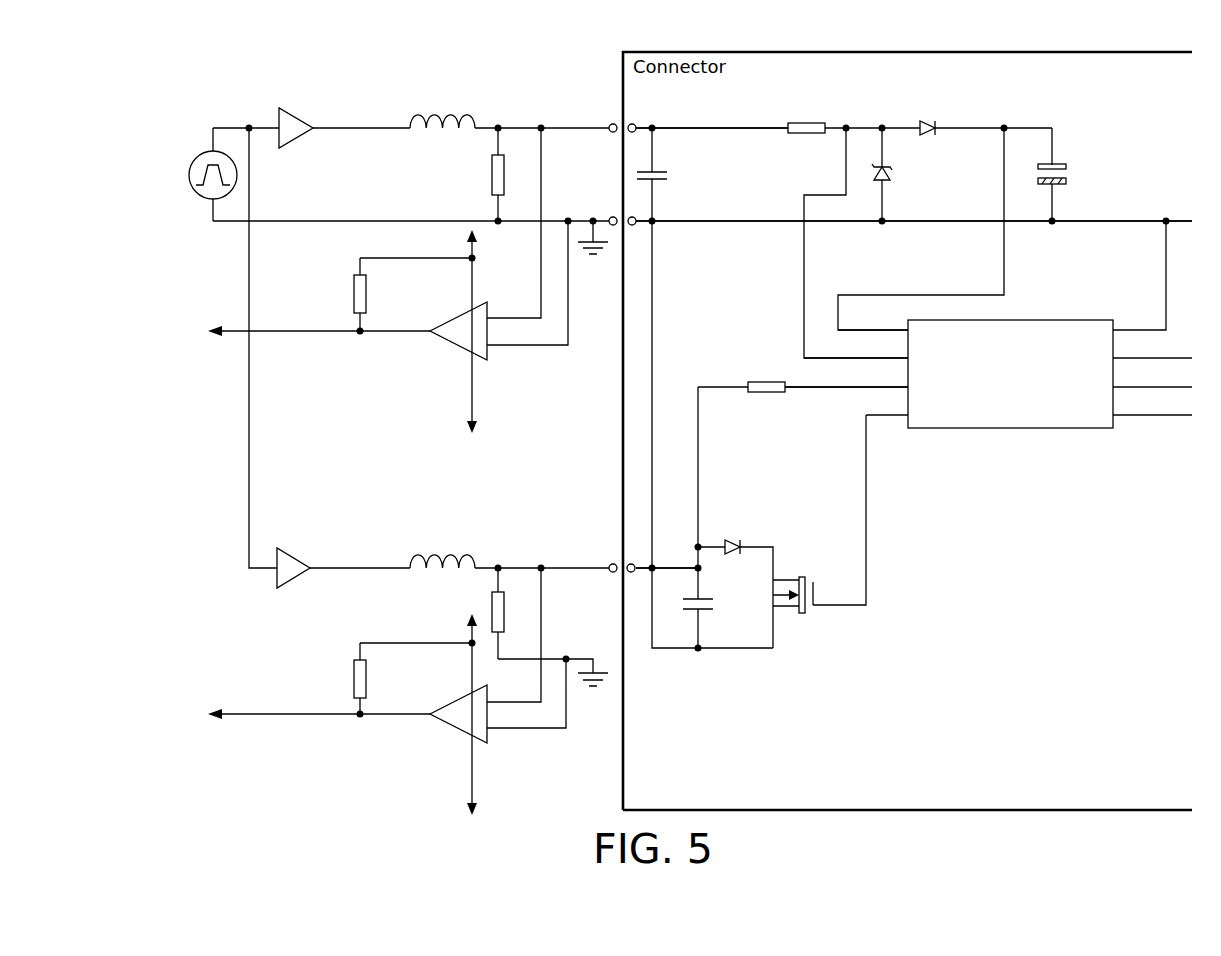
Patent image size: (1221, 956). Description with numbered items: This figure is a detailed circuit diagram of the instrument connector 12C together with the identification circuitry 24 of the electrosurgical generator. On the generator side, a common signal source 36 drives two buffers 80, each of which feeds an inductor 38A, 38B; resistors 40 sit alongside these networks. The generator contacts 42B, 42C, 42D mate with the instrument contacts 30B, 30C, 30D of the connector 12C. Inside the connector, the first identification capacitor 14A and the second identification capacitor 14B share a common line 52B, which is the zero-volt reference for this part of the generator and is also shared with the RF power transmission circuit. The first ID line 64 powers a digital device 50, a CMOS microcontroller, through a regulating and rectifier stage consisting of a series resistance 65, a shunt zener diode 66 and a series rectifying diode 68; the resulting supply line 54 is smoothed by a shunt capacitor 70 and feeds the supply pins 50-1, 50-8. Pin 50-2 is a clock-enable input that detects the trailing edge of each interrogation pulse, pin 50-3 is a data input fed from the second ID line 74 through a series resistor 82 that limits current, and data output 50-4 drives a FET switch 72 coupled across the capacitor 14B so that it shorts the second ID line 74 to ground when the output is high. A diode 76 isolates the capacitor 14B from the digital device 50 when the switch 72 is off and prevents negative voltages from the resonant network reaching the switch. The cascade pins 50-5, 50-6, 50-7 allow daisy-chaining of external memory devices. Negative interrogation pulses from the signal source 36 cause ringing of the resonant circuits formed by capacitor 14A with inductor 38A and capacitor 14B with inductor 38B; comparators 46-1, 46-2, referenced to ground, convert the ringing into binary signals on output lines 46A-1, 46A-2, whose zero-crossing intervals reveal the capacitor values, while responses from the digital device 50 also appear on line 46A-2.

The identification circuitry 24 is at (516, 76).
The signal source 36 is at (189, 175).
The buffers 80 is at (285, 108).
The inductor 38A is at (452, 114).
The inductor 38B is at (450, 555).
The resistor 40 is at (492, 175).
The contact 42B is at (611, 124).
The third contact 42C is at (610, 217).
The contact 42D is at (613, 573).
The contact 30B is at (634, 124).
The contact 30C is at (634, 225).
The contact 30D is at (628, 564).
The connector 12C is at (622, 797).
The first identification capacitor 14A is at (667, 175).
The second identification capacitor 14B is at (705, 612).
The first ID line 64 is at (737, 126).
The series resistance 65 is at (807, 122).
The series rectifying diode 68 is at (925, 120).
The shunt zener diode 66 is at (891, 177).
The shunt capacitor 70 is at (1066, 167).
The common line 52B is at (760, 225).
The supply line 54 is at (1004, 256).
The series resistor 82 is at (768, 380).
The digital device 50 is at (1010, 430).
The supply pin 50-1 is at (873, 319).
The clock enable input 50-2 is at (856, 347).
The data input pin 50-3 is at (846, 376).
The data output 50-4 is at (885, 404).
The cascade pin 50-5 is at (1152, 404).
The cascade pin 50-6 is at (1152, 376).
The cascade pin 50-7 is at (1152, 347).
The supply pin 50-8 is at (1139, 275).
The second ID line 74 is at (676, 566).
The diode 76 is at (727, 539).
The switch 72 is at (803, 576).
The comparator 46-1 is at (447, 345).
The comparator 46-2 is at (447, 728).
The output line 46A-1 is at (305, 335).
The output line 46A-2 is at (305, 718).